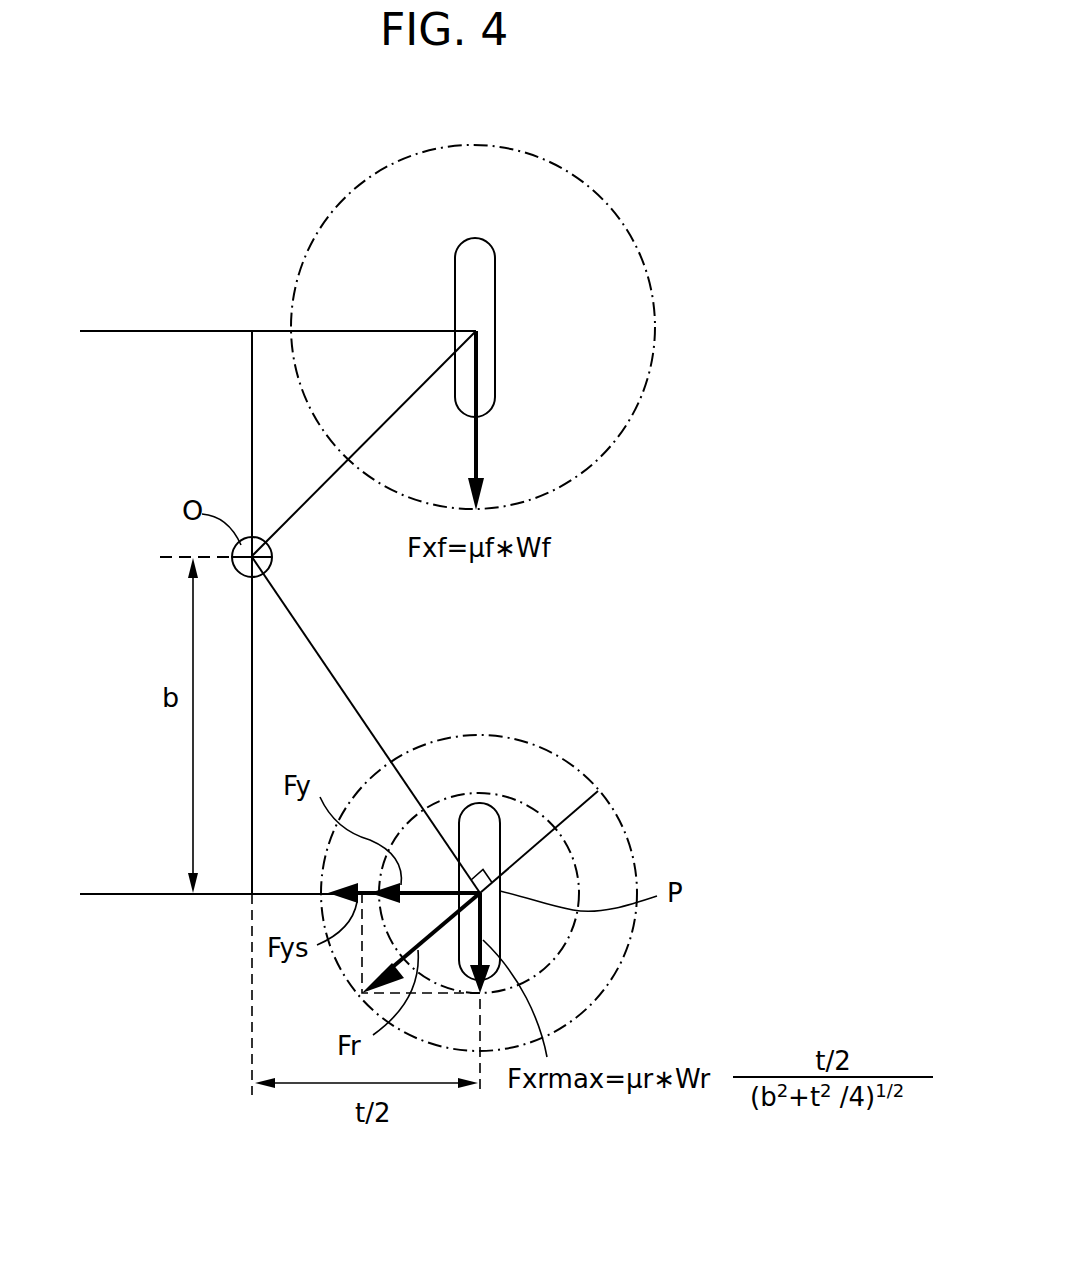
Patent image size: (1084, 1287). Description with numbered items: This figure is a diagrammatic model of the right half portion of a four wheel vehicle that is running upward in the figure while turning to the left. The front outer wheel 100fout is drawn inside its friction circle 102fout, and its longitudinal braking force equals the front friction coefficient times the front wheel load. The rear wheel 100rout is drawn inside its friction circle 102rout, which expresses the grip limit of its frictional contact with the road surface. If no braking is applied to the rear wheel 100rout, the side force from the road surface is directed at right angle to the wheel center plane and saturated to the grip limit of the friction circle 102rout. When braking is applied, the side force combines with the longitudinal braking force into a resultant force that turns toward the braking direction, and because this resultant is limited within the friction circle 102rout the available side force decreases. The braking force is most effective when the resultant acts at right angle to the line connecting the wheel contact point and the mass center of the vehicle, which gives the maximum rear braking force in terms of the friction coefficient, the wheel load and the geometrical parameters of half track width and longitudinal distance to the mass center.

The front outer wheel 100fout is at (490, 238).
The friction circle of the front outer wheel 102fout is at (641, 254).
The rear wheel 100rout is at (488, 802).
The friction circle 102rout is at (616, 819).